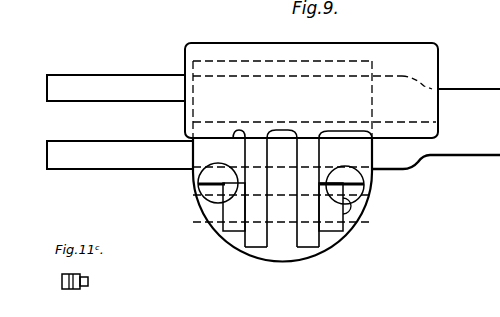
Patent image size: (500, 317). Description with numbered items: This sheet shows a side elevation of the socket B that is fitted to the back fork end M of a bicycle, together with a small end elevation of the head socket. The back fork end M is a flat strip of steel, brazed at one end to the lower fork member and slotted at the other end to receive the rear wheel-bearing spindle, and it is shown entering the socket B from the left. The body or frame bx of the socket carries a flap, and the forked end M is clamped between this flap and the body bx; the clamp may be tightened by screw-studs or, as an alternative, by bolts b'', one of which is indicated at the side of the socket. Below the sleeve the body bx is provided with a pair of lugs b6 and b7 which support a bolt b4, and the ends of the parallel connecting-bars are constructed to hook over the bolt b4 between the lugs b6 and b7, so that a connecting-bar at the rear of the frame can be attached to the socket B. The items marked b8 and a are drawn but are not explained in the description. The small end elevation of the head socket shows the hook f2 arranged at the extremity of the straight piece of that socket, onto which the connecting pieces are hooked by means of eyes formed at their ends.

In FIG. 9, the back fork end M is at (138, 66).
In FIG. 9, the socket B is at (441, 52).
In FIG. 9, the bolt b'' is at (469, 79).
In FIG. 9, the body of the socket bx is at (346, 196).
In FIG. 9, the bolt b4 is at (282, 208).
In FIG. 9, the lug b6 is at (255, 239).
In FIG. 9, the lug b7 is at (307, 239).
In FIG. 9, the roller block b8 is at (214, 196).
In FIG. 9, the part a is at (485, 5).
In FIG. 11C, the hook f2 is at (90, 280).